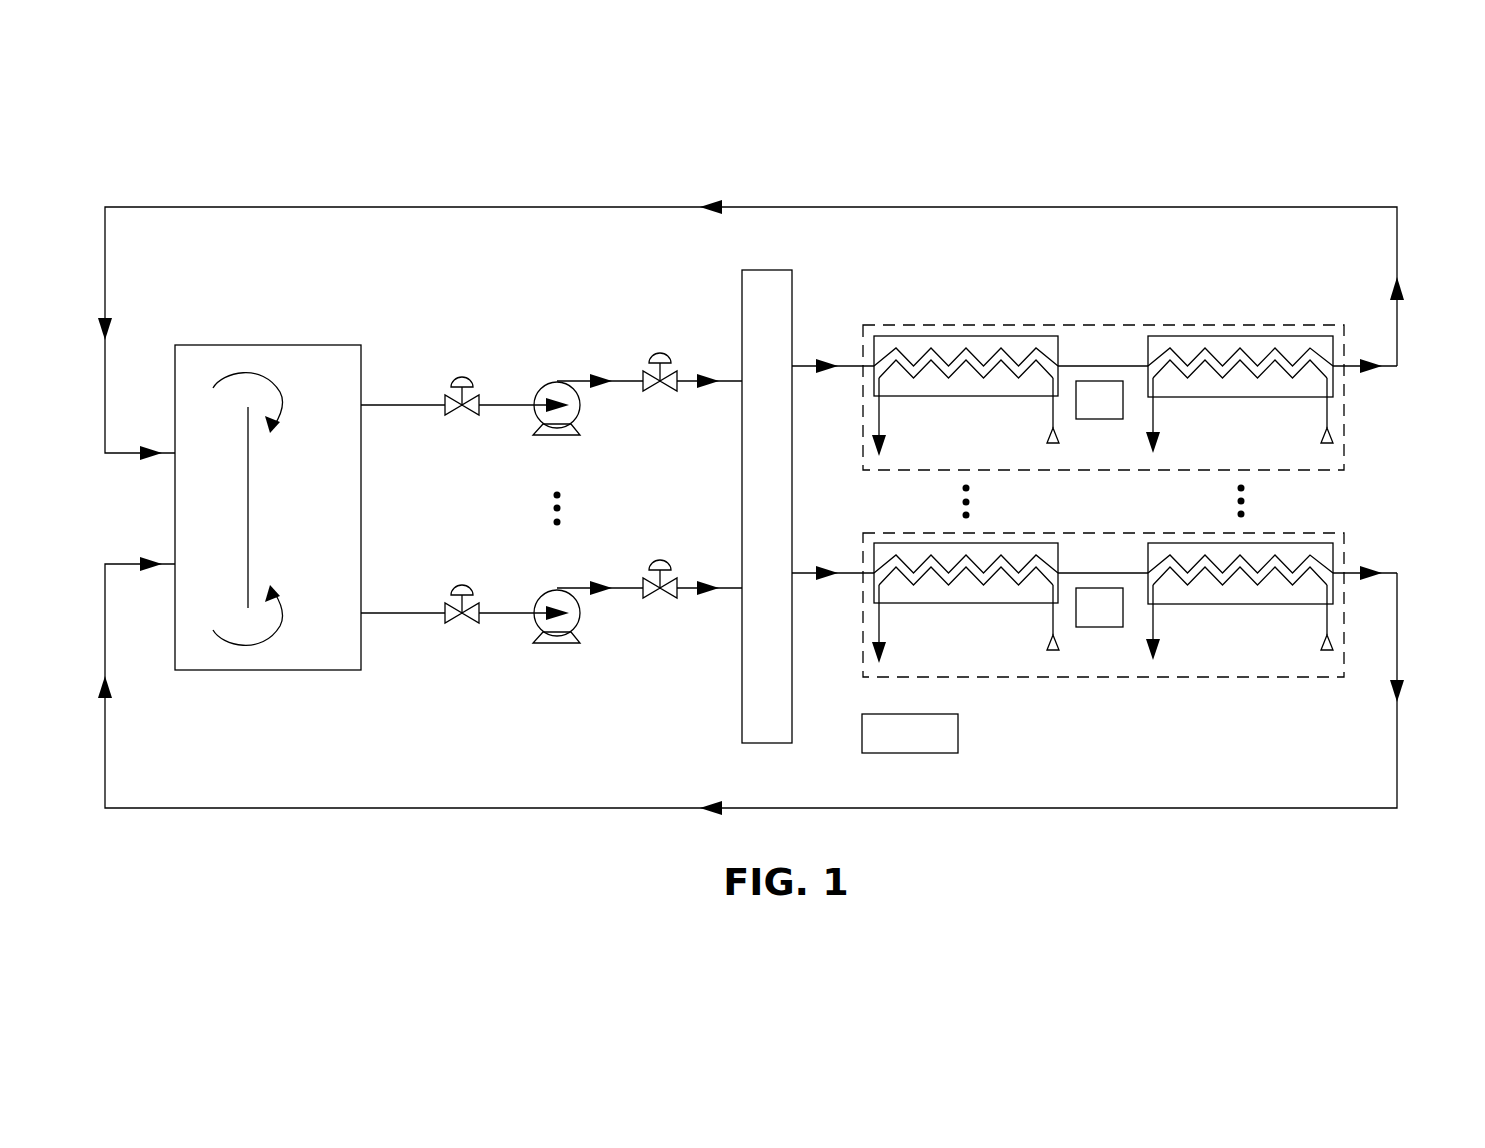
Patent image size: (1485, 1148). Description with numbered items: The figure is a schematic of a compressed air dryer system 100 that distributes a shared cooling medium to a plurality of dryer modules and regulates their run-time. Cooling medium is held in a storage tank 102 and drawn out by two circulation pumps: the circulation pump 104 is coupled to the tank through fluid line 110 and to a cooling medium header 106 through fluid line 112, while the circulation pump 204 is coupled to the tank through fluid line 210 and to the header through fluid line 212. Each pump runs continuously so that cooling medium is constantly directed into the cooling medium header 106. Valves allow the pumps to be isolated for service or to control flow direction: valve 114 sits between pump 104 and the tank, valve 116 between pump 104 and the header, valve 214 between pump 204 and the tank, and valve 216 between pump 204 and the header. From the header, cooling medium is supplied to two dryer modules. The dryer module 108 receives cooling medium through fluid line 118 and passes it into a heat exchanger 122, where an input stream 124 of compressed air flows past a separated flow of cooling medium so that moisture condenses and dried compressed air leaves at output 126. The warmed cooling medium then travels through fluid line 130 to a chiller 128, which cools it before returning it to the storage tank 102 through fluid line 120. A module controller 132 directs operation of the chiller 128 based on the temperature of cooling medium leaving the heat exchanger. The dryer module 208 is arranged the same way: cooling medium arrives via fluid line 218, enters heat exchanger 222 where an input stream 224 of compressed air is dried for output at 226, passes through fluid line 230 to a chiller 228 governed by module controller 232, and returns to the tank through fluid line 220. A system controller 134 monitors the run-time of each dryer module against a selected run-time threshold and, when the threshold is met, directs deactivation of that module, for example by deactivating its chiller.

The compressed air dryer system 100 is at (252, 135).
The storage tank 102 is at (267, 343).
The circulation pump 104 is at (536, 389).
The cooling medium header 106 is at (768, 268).
The dryer module 108 is at (1025, 325).
The fluid line 110 is at (402, 403).
The fluid line 112 is at (630, 379).
The valve 114 is at (462, 376).
The valve 116 is at (662, 354).
The fluid line 118 is at (849, 364).
The fluid line 120 is at (1399, 240).
The heat exchanger 122 is at (935, 336).
The input stream 124 is at (1058, 433).
The output 126 is at (876, 419).
The chiller 128 is at (1265, 336).
The fluid line 130 is at (1100, 366).
The module controller 132 is at (1098, 420).
The controller 134 is at (910, 753).
The circulation pump 204 is at (555, 644).
The dryer module 208 is at (1100, 679).
The fluid line 210 is at (402, 611).
The fluid line 212 is at (630, 586).
The valve 214 is at (462, 584).
The valve 216 is at (662, 561).
The fluid line 218 is at (849, 571).
The fluid line 220 is at (1399, 757).
The heat exchanger 222 is at (910, 543).
The input stream 224 is at (1058, 641).
The output 226 is at (876, 626).
The chiller 228 is at (1289, 543).
The fluid line 230 is at (1100, 573).
The module controller 232 is at (1100, 628).